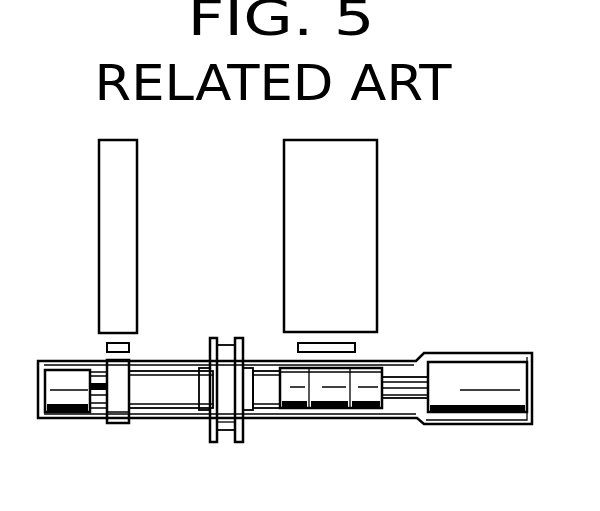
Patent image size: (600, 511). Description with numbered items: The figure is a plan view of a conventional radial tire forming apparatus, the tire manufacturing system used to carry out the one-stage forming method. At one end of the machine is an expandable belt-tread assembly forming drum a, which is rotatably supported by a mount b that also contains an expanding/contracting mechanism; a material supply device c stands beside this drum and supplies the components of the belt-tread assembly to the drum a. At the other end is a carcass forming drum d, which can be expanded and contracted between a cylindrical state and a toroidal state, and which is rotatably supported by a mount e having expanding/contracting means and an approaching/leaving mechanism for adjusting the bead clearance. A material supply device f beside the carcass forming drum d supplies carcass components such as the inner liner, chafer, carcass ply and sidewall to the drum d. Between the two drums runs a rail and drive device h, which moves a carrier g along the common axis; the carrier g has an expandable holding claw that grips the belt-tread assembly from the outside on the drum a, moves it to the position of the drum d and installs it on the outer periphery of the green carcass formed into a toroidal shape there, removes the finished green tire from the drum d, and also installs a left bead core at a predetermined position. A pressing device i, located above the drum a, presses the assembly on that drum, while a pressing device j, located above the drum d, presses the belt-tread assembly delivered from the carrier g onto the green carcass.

The belt-tread assembly forming drum a is at (117, 423).
The mount b is at (68, 412).
The material supply device c is at (100, 258).
The carcass forming drum d is at (332, 410).
The mount e is at (485, 412).
The material supply device f is at (378, 255).
The carrier g is at (224, 437).
The rail and drive device h is at (170, 408).
The pressing device i is at (130, 348).
The pressing device j is at (356, 348).